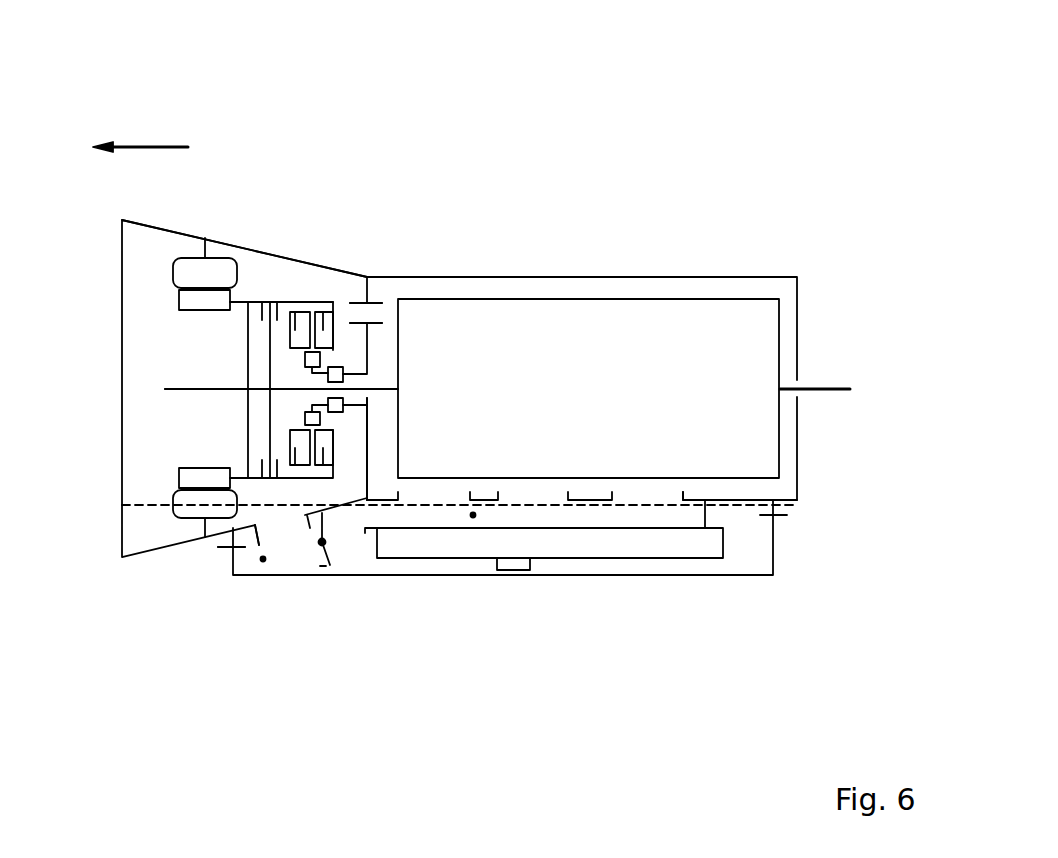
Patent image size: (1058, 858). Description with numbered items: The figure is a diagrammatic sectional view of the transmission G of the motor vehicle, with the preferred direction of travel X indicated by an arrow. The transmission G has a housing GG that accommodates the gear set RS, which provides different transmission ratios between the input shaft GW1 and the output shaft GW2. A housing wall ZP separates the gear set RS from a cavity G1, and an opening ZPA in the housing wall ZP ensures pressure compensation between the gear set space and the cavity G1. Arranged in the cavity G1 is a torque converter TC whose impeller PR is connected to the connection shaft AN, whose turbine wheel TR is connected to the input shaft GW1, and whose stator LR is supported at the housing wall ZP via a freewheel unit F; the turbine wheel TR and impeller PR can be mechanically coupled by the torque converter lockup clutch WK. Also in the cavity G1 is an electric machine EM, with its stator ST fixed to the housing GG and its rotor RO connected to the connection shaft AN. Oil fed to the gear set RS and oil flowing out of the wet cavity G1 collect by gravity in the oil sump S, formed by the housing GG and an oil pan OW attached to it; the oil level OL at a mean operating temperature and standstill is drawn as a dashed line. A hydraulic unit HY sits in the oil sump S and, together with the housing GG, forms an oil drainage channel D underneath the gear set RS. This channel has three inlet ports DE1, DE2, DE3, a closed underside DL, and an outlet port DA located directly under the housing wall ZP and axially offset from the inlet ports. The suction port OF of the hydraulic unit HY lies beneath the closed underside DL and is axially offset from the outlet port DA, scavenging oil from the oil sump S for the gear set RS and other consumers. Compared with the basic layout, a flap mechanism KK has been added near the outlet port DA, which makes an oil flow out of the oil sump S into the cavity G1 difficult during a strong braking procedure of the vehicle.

The preferred direction of travel X is at (140, 129).
The transmission G is at (750, 182).
The housing GG is at (777, 277).
The stator ST is at (183, 272).
The electric machine EM is at (145, 280).
The rotor RO is at (183, 300).
The stator LR is at (305, 358).
The connection shaft AN is at (165, 389).
The cavity G1 is at (165, 421).
The torque converter lockup clutch WK is at (260, 456).
The oil level OL is at (157, 505).
The turbine wheel TR is at (306, 294).
The torque converter TC is at (298, 301).
The impeller PR is at (323, 302).
The freewheel unit F is at (338, 367).
The opening ZPA is at (382, 313).
The input shaft GW1 is at (373, 388).
The gear set RS is at (618, 299).
The output shaft GW2 is at (815, 389).
The inlet port DE1 is at (439, 497).
The inlet port DE2 is at (525, 497).
The inlet port DE3 is at (643, 497).
The oil sump S is at (263, 559).
The flap mechanism KK is at (308, 558).
The outlet port DA is at (355, 524).
The housing wall ZP is at (367, 428).
The oil drainage channel D is at (473, 515).
The suction port OF is at (515, 568).
The underside DL is at (576, 527).
The oil pan OW is at (666, 577).
The hydraulic unit HY is at (687, 542).